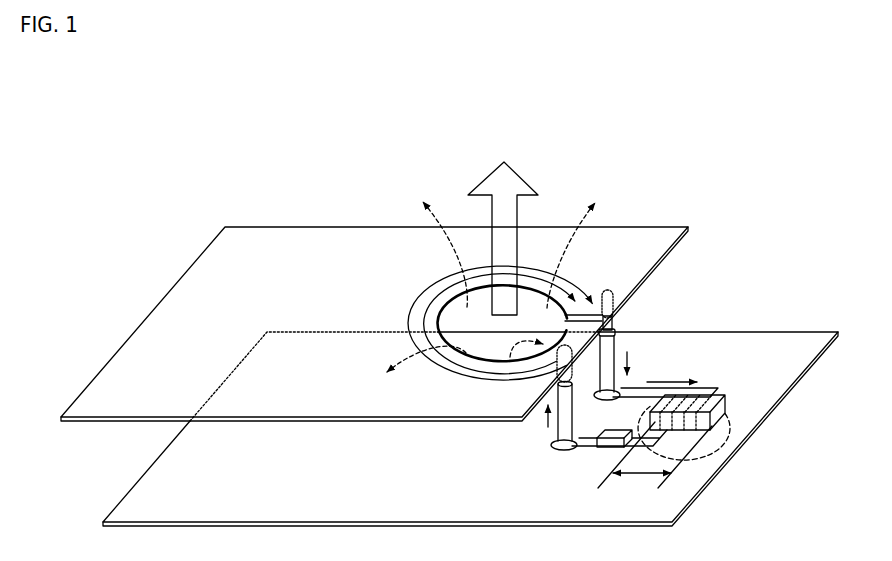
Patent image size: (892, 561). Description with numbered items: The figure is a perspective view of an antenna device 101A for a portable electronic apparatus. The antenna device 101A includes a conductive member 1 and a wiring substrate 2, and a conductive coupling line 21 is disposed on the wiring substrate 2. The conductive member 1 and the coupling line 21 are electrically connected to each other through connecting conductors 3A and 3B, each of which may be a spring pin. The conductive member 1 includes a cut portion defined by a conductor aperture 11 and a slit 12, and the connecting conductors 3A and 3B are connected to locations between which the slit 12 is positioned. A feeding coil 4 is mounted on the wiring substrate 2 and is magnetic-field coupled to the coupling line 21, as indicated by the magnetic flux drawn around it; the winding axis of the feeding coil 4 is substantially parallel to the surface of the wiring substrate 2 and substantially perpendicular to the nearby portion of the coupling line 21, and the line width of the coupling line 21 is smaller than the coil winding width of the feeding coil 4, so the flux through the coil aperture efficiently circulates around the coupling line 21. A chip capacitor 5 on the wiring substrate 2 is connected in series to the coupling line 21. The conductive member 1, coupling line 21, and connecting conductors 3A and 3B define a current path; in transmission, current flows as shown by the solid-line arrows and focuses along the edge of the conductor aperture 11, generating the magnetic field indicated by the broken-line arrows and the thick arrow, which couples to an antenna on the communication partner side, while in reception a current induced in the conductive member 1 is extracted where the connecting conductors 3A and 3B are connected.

The antenna device 101A is at (790, 140).
The conductive member 1 is at (205, 270).
The wiring substrate 2 is at (790, 341).
The conductor aperture 11 is at (528, 303).
The slit 12 is at (601, 310).
The connecting conductor 3A is at (563, 428).
The connecting conductor 3B is at (614, 346).
The coupling line 21 is at (657, 392).
The feeding coil 4 is at (732, 397).
The chip capacitor 5 is at (610, 448).